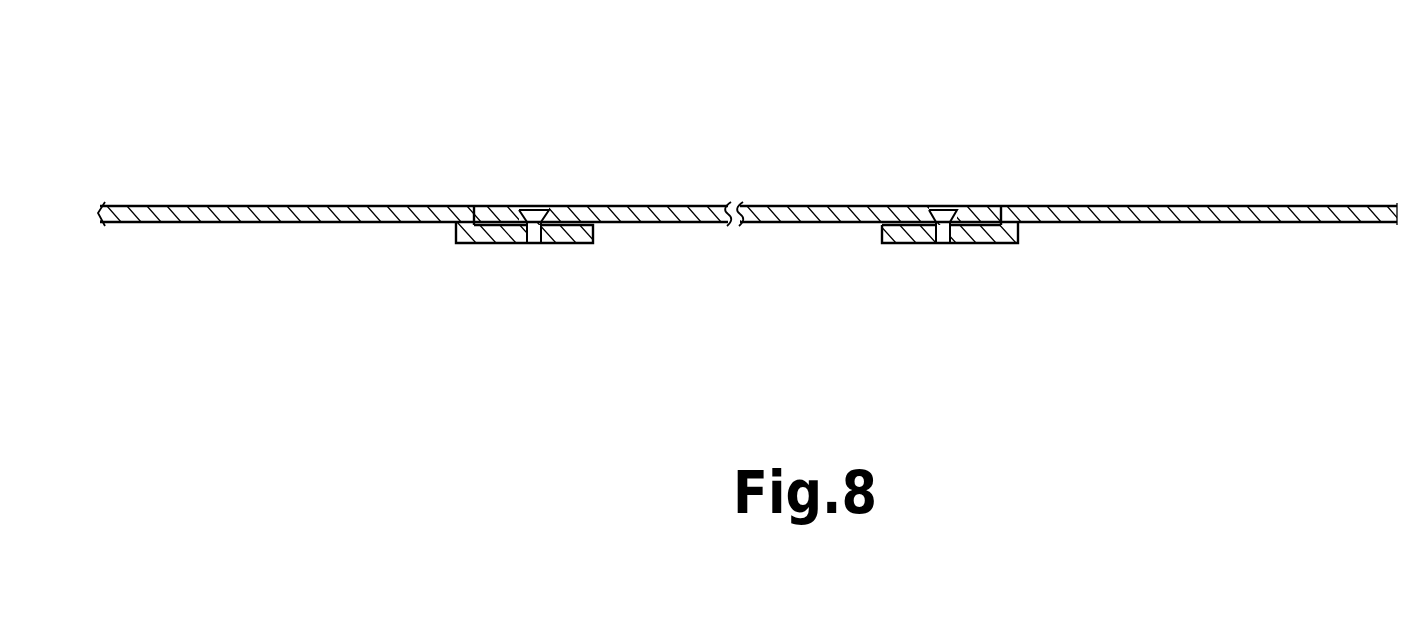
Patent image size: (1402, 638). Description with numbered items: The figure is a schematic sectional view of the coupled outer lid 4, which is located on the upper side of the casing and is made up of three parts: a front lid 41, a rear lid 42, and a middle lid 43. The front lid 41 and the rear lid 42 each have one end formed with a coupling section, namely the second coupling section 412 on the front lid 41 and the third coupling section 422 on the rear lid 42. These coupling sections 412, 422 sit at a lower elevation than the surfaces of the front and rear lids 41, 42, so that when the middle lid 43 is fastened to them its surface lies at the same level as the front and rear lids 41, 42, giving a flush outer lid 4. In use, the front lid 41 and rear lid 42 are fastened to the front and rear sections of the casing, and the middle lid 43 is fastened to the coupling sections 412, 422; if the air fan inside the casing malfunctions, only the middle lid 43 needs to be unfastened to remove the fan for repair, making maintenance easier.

The outer lid 4 is at (529, 131).
The front lid 41 is at (212, 206).
The rear lid 42 is at (1250, 206).
The middle lid 43 is at (638, 206).
The second coupling section 412 is at (497, 244).
The third coupling section 422 is at (908, 244).